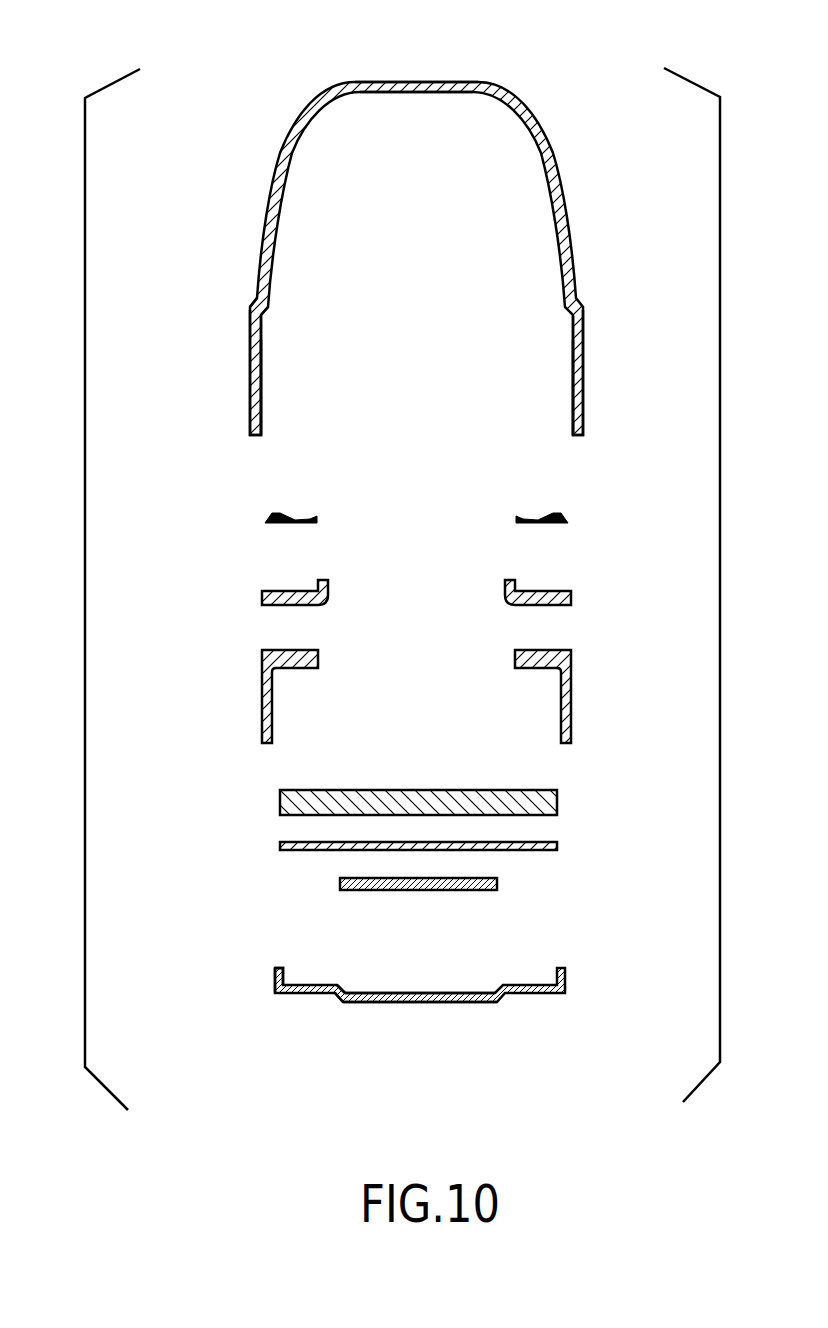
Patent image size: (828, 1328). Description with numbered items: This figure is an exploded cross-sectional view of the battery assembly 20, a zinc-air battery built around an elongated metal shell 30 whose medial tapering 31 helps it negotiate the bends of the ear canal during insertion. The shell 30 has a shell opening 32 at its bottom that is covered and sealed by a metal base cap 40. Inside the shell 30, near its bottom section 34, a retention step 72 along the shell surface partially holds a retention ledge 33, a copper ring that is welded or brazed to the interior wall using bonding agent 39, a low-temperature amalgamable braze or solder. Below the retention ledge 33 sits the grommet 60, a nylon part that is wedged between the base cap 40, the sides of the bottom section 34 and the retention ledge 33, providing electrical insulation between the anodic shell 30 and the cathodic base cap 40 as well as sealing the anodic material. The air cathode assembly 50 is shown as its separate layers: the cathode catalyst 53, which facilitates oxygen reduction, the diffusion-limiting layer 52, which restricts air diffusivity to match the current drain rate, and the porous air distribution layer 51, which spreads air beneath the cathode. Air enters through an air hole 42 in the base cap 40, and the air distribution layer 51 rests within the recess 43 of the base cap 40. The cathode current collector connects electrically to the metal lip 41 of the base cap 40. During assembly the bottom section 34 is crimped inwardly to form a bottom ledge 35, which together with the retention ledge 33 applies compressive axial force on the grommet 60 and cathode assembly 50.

The battery assembly 20 is at (595, 210).
The metal shell 30 is at (280, 163).
The medial tapering 31 is at (488, 82).
The shell opening 32 is at (513, 415).
The retention ledge 33 is at (572, 595).
The bottom section of the shell 34 is at (232, 308).
The bottom ledge 35 is at (585, 362).
The bonding agent 39 is at (560, 520).
The metal base cap 40 is at (302, 995).
The metal lip 41 is at (275, 975).
The air hole 42 is at (422, 1002).
The recess 43 is at (370, 988).
The air cathode assembly 50 is at (175, 792).
The air distribution layer 51 is at (340, 884).
The diffusion-limiting layer 52 is at (280, 844).
The cathode catalyst 53 is at (280, 800).
The grommet 60 is at (260, 720).
The retention step 72 is at (250, 302).